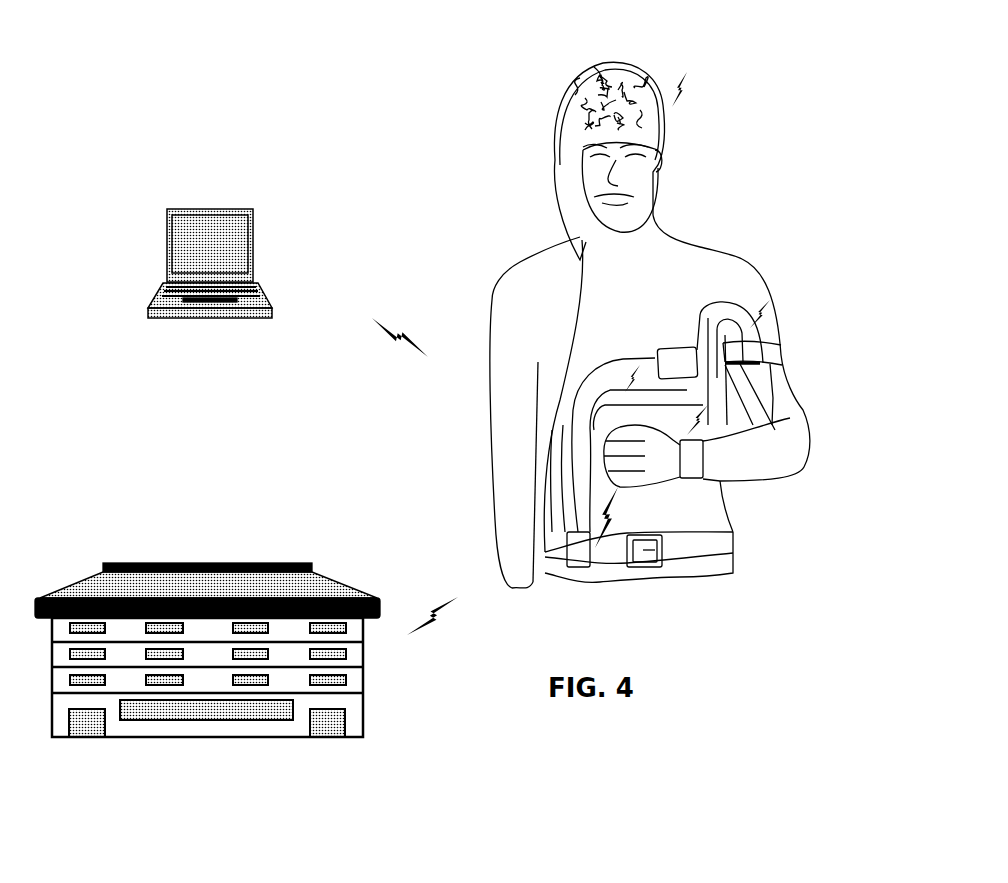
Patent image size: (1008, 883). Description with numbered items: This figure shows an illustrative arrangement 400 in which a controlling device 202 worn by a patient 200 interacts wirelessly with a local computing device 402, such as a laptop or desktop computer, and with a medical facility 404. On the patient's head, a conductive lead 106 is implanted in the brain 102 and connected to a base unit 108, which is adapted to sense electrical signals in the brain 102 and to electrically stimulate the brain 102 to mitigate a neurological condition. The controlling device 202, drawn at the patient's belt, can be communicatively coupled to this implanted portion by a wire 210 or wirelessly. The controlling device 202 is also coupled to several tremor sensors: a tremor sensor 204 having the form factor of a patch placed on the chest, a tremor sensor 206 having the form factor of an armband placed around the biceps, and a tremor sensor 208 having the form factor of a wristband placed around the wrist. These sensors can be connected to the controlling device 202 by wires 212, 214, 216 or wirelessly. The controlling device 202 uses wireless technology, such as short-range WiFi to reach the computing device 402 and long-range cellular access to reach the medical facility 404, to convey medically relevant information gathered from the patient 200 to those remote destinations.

The brain 102 is at (573, 105).
The conductive lead 106 is at (613, 97).
The base unit 108 is at (620, 75).
The user 200 is at (487, 302).
The controlling device 202 is at (577, 542).
The tremor sensor 204 is at (675, 357).
The tremor sensor 206 is at (765, 347).
The tremor sensor 208 is at (688, 463).
The wire 210 is at (560, 188).
The wire 212 is at (577, 448).
The wire 214 is at (725, 320).
The wire 216 is at (773, 398).
The system 400 is at (587, 638).
The computing device 402 is at (212, 212).
The medical facility 404 is at (165, 563).